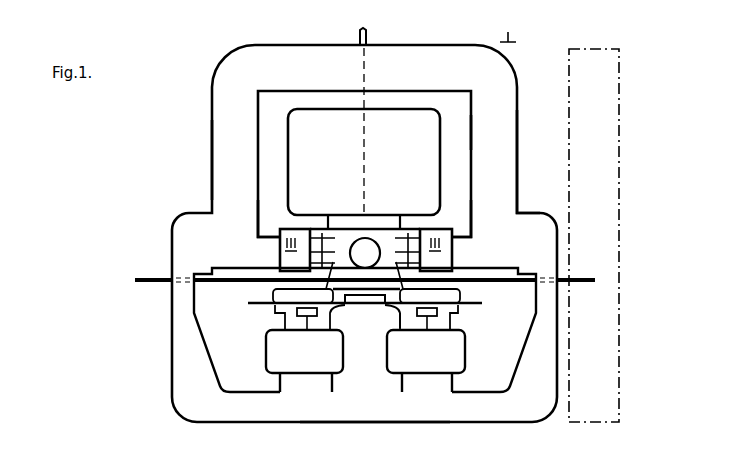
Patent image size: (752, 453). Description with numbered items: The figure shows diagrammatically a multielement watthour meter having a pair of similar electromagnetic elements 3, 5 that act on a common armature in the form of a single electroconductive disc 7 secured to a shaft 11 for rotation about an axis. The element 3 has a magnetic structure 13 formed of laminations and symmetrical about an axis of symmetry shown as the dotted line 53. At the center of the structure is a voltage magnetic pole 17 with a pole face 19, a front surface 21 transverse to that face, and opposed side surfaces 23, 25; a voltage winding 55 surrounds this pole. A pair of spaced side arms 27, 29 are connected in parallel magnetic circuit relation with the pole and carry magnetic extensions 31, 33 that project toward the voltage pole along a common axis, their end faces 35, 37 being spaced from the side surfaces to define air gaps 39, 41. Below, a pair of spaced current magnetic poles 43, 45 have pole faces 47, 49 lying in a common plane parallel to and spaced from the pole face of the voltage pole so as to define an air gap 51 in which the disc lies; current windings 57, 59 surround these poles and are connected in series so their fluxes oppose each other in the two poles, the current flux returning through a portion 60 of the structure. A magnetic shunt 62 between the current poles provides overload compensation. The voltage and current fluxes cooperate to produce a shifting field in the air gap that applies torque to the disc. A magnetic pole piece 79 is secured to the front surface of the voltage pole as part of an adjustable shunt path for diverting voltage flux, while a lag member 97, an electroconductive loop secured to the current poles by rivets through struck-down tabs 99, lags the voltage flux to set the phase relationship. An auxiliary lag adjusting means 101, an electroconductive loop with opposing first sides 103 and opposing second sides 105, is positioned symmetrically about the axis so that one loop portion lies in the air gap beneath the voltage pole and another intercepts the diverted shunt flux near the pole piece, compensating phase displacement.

The electromagnetic element 3 is at (212, 104).
The electromagnetic element 5 is at (600, 49).
The electroconductive disc 7 is at (240, 283).
The shaft 11 is at (368, 34).
The magnetic structure 13 is at (517, 138).
The voltage magnetic pole 17 is at (418, 97).
The pole face 19 is at (365, 253).
The front surface 21 is at (354, 297).
The side surface 23 is at (326, 227).
The side surface 25 is at (406, 227).
The side arm 27 is at (212, 158).
The side arm 29 is at (517, 172).
The magnetic extension 31 is at (270, 237).
The magnetic extension 33 is at (459, 237).
The end face 35 is at (293, 255).
The end face 37 is at (438, 255).
The air gap 39 is at (331, 261).
The air gap 41 is at (402, 261).
The current magnetic pole 43 is at (275, 322).
The current magnetic pole 45 is at (456, 322).
The pole face 47 is at (303, 297).
The pole face 49 is at (430, 297).
The air gap 51 is at (476, 303).
The axis of symmetry 53 is at (367, 149).
The voltage winding 55 is at (441, 130).
The current winding 57 is at (266, 355).
The current winding 59 is at (465, 352).
The portion of the structure 60 is at (377, 412).
The magnetic shunt 62 is at (349, 305).
The magnetic pole piece 79 is at (376, 228).
The lag member 97 is at (394, 306).
The struck-down tabs 99 is at (367, 329).
The auxiliary lag adjusting means 101 is at (454, 263).
The first sides 103 is at (280, 243).
The second sides 105 is at (338, 228).